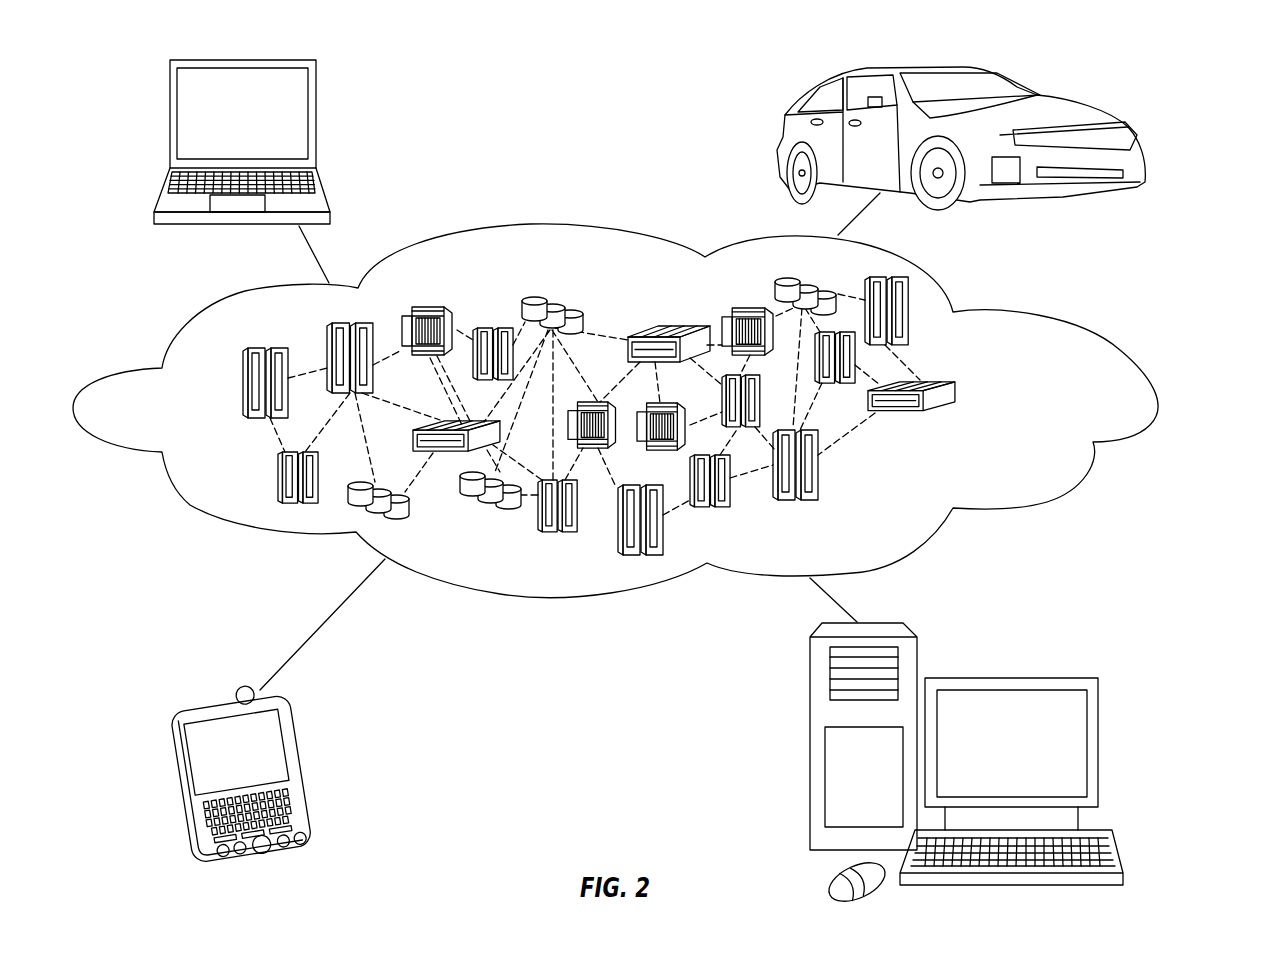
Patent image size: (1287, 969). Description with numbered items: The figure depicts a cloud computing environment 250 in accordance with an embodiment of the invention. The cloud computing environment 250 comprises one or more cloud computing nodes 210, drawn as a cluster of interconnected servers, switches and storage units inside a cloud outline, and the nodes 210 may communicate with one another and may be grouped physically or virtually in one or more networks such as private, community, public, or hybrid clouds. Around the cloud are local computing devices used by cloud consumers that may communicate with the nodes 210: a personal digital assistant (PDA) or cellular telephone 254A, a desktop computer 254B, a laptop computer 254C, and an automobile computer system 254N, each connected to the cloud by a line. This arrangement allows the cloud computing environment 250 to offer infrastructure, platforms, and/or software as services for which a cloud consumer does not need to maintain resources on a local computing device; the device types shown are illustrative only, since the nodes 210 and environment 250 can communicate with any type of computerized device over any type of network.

The cloud computing environment 250 is at (1157, 412).
The cloud computing nodes 210 is at (953, 428).
The laptop computer 254C is at (316, 115).
The automobile computer system 254N is at (778, 138).
The personal digital assistant (PDA) or cellular telephone 254A is at (302, 770).
The desktop computer 254B is at (1010, 678).